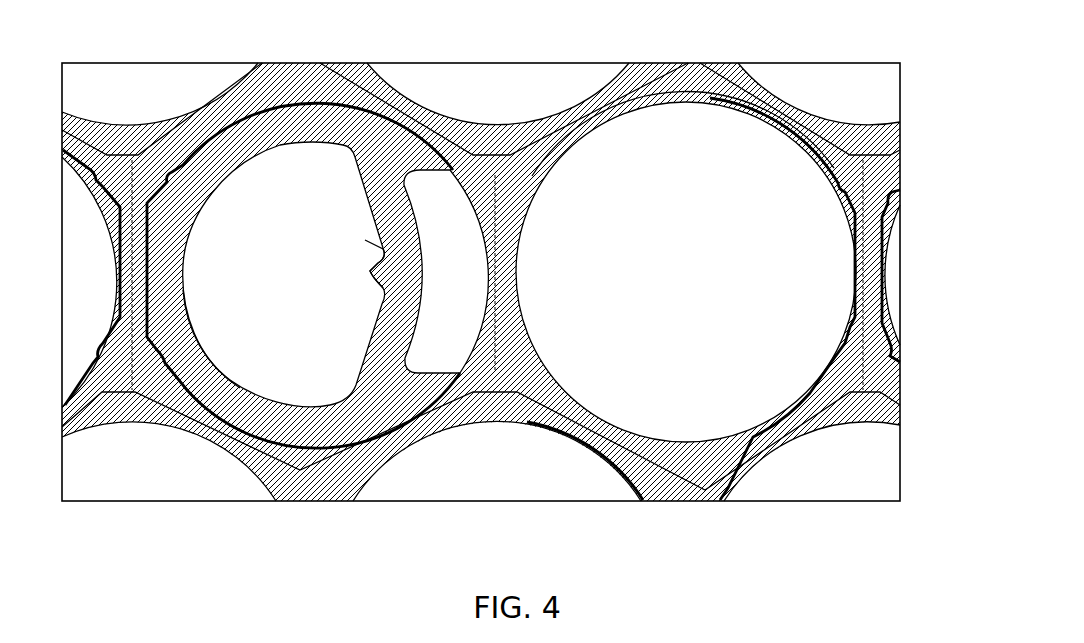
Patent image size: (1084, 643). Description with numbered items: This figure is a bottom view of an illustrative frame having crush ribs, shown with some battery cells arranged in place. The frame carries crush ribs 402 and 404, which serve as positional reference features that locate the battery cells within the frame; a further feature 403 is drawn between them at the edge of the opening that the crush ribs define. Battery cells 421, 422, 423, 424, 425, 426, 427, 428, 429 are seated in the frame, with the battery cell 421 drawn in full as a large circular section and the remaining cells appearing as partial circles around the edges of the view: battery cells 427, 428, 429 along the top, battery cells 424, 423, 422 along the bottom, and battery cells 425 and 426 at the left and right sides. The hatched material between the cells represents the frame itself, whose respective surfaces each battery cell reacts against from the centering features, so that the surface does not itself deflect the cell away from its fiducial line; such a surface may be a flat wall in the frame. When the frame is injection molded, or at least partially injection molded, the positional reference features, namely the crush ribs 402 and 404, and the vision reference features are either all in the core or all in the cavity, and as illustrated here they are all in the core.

The crush rib 402 is at (210, 197).
The protrusion 403 is at (370, 277).
The crush rib 404 is at (197, 337).
The battery cell 421 is at (662, 285).
The battery cell 422 is at (812, 487).
The battery cell 423 is at (461, 487).
The battery cell 424 is at (115, 488).
The battery cell 425 is at (85, 300).
The battery cell 426 is at (890, 290).
The battery cell 427 is at (117, 101).
The battery cell 428 is at (476, 107).
The battery cell 429 is at (825, 102).